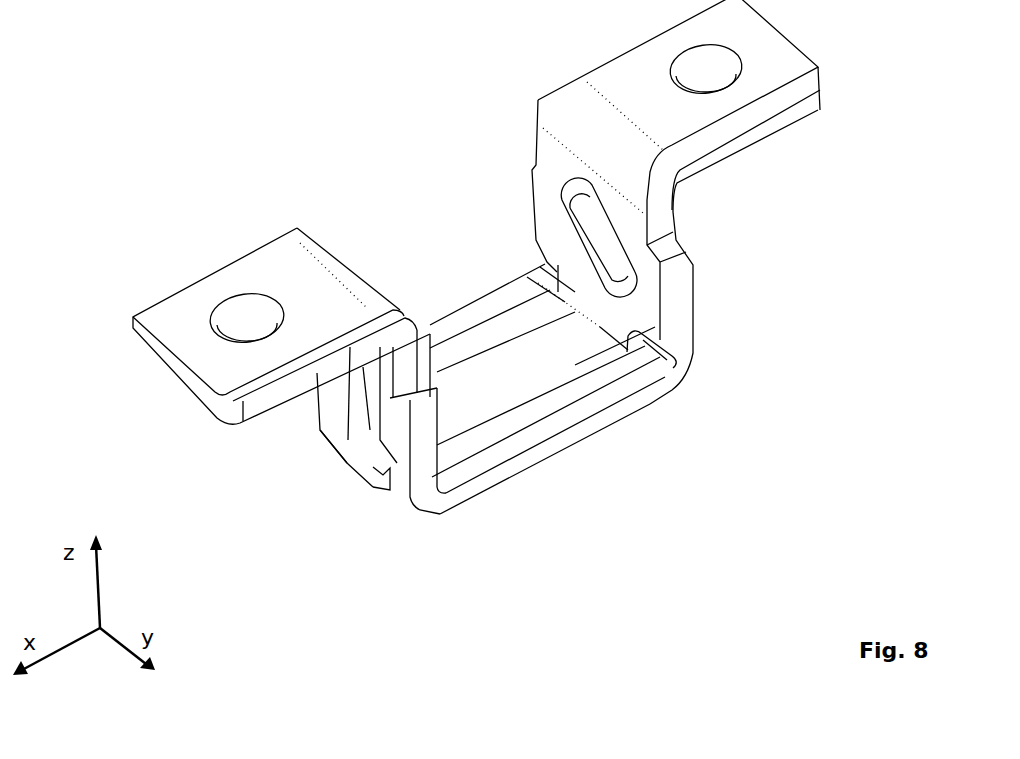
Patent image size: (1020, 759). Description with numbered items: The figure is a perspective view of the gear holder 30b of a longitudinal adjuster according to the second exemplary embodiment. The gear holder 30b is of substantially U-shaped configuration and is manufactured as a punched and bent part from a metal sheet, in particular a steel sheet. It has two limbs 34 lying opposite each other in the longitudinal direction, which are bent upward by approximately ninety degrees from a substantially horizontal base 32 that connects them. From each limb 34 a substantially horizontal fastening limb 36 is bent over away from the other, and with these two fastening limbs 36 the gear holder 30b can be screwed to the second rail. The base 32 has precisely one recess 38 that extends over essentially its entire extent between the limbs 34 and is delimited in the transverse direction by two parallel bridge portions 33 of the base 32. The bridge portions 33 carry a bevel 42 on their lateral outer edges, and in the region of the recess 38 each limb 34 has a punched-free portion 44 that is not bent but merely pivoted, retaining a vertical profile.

The gear holder 30b is at (190, 134).
The base 32 is at (543, 416).
The bridge portions 33 is at (470, 322).
The limbs 34 is at (655, 309).
The fastening limb 36 is at (753, 83).
The recess 38 is at (546, 343).
The bevel 42 is at (637, 387).
The portion 44 is at (347, 467).